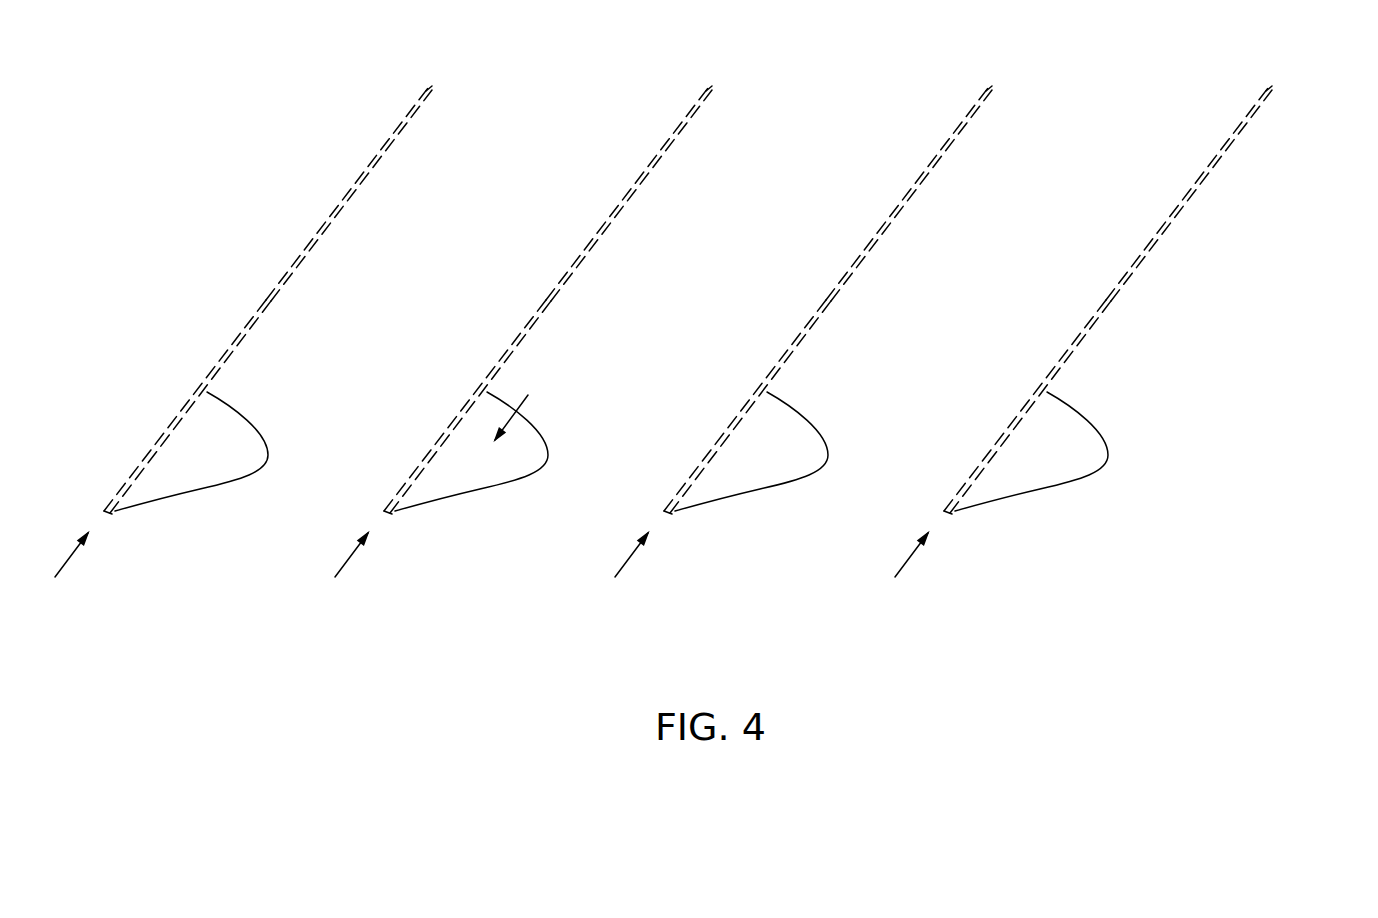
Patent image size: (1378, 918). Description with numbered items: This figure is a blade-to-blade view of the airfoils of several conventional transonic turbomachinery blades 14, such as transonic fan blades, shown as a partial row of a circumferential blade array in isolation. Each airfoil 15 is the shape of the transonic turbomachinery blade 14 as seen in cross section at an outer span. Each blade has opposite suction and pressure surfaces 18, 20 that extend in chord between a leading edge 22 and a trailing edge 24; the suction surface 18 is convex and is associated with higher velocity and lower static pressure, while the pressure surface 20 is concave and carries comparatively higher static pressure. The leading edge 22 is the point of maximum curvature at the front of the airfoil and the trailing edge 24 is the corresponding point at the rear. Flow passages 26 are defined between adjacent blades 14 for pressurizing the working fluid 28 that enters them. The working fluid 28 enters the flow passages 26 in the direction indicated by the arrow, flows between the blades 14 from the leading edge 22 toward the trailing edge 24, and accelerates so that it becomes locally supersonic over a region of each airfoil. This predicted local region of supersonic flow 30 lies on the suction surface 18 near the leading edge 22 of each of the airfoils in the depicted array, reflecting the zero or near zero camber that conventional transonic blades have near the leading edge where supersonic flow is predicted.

The transonic turbomachinery blade 14 is at (432, 137).
The airfoil 15 is at (355, 193).
The suction surface 18 is at (287, 283).
The pressure surface 20 is at (224, 353).
The leading edge 22 is at (106, 514).
The trailing edge 24 is at (428, 90).
The flow passage 26 is at (336, 395).
The working fluid flow 28 is at (68, 558).
The predicted local region of supersonic flow 30 is at (217, 468).